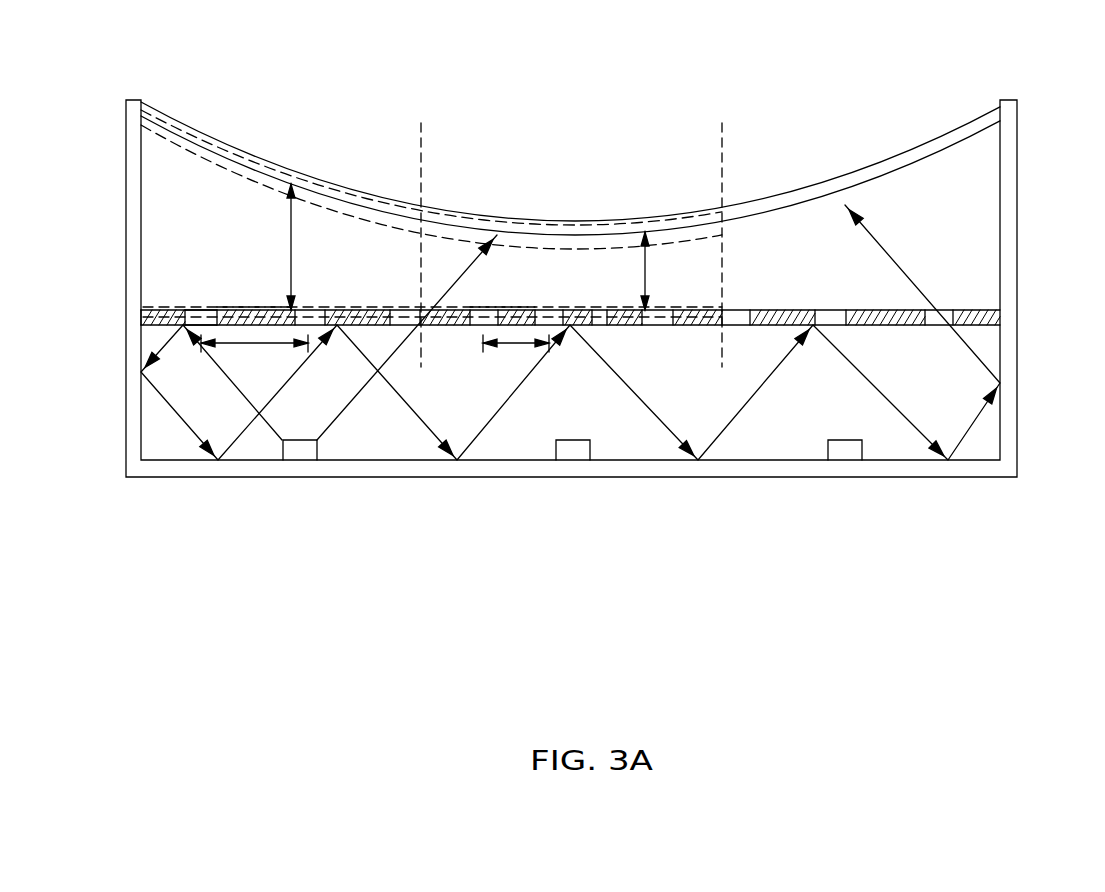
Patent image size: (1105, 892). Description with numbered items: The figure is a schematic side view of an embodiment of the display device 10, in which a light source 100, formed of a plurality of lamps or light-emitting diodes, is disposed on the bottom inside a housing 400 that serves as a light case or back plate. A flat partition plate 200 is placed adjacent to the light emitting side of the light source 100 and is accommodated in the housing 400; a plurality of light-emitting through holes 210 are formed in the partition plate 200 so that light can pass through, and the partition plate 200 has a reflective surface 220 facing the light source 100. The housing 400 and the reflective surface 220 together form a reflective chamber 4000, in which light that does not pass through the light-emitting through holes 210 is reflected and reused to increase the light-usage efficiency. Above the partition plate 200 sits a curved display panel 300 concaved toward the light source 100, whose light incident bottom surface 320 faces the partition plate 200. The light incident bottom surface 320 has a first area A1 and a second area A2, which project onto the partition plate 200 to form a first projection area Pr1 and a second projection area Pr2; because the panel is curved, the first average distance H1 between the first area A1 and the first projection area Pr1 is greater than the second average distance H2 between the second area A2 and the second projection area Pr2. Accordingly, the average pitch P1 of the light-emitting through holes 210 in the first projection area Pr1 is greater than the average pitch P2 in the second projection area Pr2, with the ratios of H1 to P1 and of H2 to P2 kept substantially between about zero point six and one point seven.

The backlight module 10 is at (100, 80).
The light source 100 is at (298, 452).
The partition plate 200 is at (893, 312).
The light-emitting through holes 210 is at (202, 296).
The reflective surface 220 is at (913, 326).
The display panel 300 is at (980, 118).
The light incident bottom surface 320 is at (920, 160).
The housing 400 is at (140, 198).
The reflective chamber 4000 is at (146, 414).
The first projection area Pr1 is at (240, 307).
The second projection area Pr2 is at (478, 307).
The first average distance H1 is at (309, 247).
The second average distance H2 is at (666, 271).
The first area A1 is at (351, 224).
The second area A2 is at (701, 244).
The average pitch P1 is at (254, 357).
The average pitch P2 is at (516, 357).